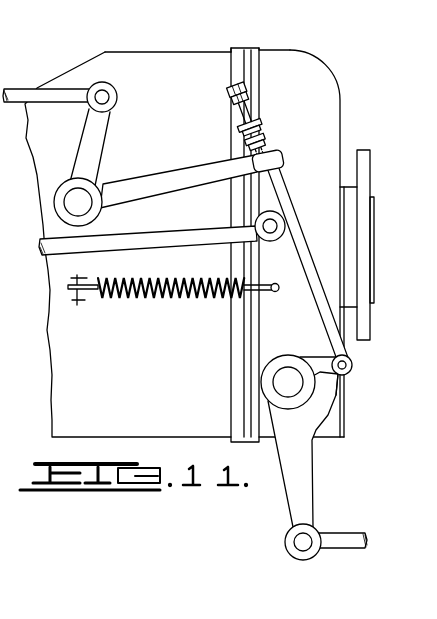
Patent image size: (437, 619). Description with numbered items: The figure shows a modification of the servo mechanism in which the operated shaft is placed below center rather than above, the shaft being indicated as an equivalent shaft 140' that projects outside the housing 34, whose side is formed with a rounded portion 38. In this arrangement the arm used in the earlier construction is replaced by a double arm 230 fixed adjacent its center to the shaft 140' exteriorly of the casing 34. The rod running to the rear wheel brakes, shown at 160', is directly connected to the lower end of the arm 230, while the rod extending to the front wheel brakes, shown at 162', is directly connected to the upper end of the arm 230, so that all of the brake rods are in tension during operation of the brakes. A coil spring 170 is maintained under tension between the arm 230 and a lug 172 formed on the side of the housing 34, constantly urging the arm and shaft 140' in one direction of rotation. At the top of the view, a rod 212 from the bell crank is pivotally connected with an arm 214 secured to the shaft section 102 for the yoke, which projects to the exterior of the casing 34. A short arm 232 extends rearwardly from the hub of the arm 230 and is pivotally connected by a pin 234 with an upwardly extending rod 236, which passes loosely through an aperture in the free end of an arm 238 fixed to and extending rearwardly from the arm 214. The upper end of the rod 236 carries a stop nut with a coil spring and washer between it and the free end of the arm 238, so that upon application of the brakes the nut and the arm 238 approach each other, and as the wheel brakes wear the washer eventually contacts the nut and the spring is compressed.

The housing 34 is at (156, 52).
The cover portion 38 is at (302, 60).
The rod 212 is at (12, 88).
The arm 214 is at (97, 123).
The shaft section 102 is at (70, 206).
The arm 238 is at (206, 176).
The rod 162' is at (162, 232).
The rod 236 is at (307, 195).
The coil spring 170 is at (128, 300).
The lug 172 is at (82, 300).
The pin 234 is at (352, 362).
The short arm 232 is at (340, 381).
The shaft 140' is at (326, 385).
The double arm 230 is at (302, 464).
The rod 160' is at (347, 548).